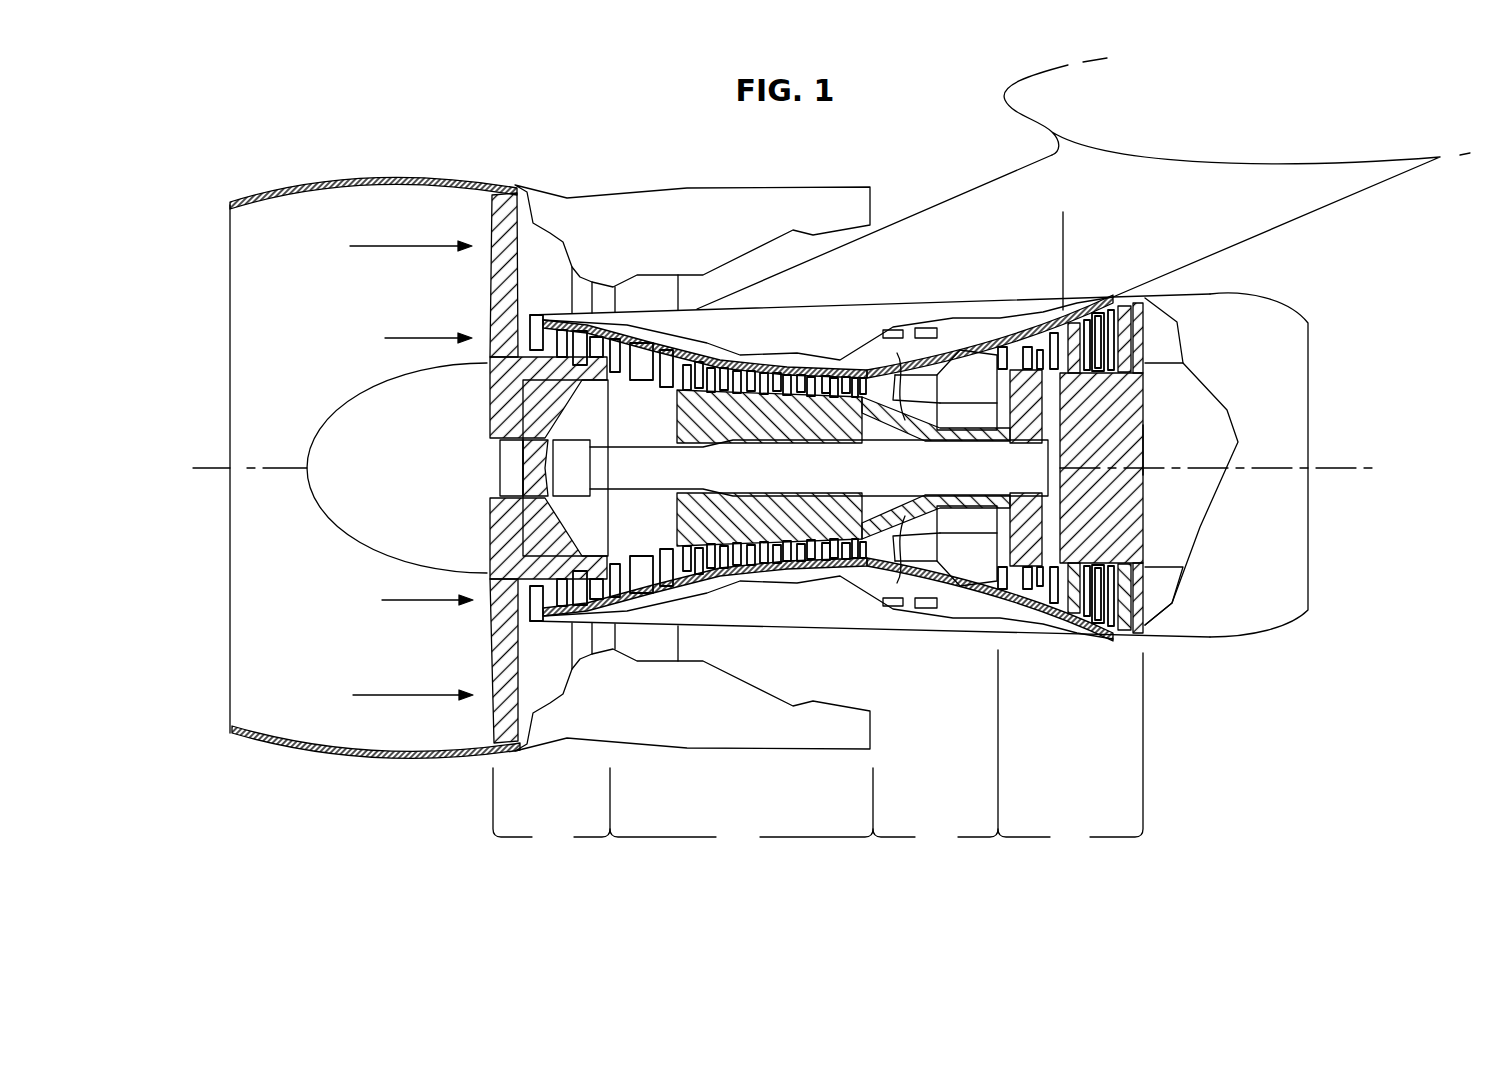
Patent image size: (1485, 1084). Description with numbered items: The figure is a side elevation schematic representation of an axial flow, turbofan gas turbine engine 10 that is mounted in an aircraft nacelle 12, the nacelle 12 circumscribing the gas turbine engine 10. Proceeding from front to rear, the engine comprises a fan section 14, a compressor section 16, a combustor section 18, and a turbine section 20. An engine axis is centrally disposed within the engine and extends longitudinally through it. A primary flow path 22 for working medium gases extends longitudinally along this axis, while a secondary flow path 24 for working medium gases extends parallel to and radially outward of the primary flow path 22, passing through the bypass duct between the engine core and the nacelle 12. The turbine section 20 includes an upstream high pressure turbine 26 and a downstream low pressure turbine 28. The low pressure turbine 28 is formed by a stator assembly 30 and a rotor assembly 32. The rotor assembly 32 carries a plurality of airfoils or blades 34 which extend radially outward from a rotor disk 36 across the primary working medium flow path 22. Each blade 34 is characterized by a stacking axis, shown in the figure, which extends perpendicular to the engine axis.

The gas turbine engine 10 is at (1160, 308).
The nacelle 12 is at (1280, 303).
The fan section 14 is at (458, 525).
The compressor section 16 is at (781, 521).
The combustor section 18 is at (935, 593).
The turbine section 20 is at (1118, 578).
The primary flow path 22 is at (411, 470).
The secondary flow path 24 is at (395, 473).
The high pressure turbine 26 is at (1017, 605).
The low pressure turbine 28 is at (1098, 637).
The stator assembly 30 is at (1120, 643).
The rotor assembly 32 is at (1160, 528).
The blade 34 is at (1077, 322).
The rotor disk 36 is at (1138, 446).